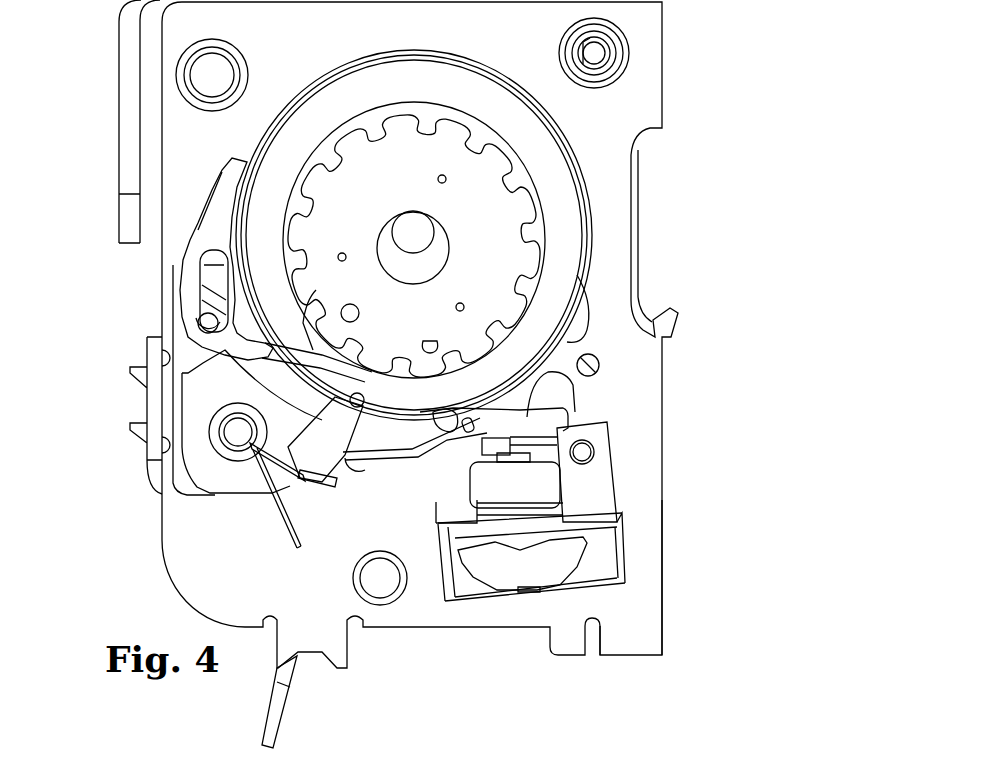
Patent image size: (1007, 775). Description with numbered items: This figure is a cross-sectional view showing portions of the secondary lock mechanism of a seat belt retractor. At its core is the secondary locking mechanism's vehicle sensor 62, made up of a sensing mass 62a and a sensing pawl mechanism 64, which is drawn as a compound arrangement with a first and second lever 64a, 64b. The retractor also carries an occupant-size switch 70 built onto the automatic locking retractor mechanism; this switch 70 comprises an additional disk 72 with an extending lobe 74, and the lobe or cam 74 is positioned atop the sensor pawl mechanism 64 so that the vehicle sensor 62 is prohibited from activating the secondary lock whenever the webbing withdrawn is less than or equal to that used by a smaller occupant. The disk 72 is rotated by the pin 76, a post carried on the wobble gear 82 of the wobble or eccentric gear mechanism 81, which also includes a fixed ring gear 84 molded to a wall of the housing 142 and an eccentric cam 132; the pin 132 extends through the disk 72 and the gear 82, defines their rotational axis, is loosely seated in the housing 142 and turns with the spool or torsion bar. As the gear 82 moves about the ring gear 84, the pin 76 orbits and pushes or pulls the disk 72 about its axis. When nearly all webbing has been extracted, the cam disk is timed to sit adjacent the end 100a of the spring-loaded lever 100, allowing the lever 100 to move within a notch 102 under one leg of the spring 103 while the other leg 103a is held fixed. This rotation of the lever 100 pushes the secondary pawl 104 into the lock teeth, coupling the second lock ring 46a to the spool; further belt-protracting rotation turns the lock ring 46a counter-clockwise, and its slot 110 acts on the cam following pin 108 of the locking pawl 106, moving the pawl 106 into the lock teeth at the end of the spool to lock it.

The second lock ring 46a is at (223, 177).
The vehicle sensor 62 is at (436, 567).
The sensing mass 62a is at (530, 478).
The sensing pawl mechanism 64 is at (537, 428).
The first lever 64a is at (490, 445).
The second lever 64b is at (443, 438).
The occupant-size switch 70 is at (565, 257).
The disk 72 is at (560, 233).
The lobe 74 is at (573, 330).
The pin 76 is at (360, 315).
The wobble or eccentric gear mechanism 81 is at (362, 124).
The wobble gear 82 is at (450, 147).
The fixed ring gear 84 is at (517, 177).
The spring-loaded lever 100 is at (323, 497).
The end of lever 100a is at (360, 386).
The notch 102 is at (317, 303).
The spring 103 is at (282, 525).
The other leg of spring 103a is at (297, 550).
The secondary pawl 104 is at (395, 435).
The locking pawl 106 is at (212, 460).
The cam following pin 108 is at (208, 323).
The slot 110 is at (210, 277).
The eccentric cam / pin 132 is at (417, 237).
The housing 142 is at (567, 397).